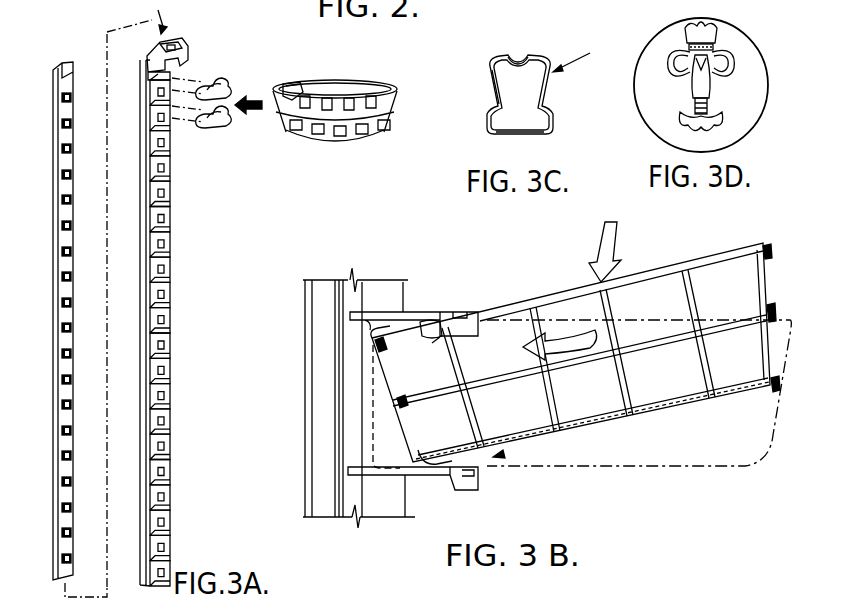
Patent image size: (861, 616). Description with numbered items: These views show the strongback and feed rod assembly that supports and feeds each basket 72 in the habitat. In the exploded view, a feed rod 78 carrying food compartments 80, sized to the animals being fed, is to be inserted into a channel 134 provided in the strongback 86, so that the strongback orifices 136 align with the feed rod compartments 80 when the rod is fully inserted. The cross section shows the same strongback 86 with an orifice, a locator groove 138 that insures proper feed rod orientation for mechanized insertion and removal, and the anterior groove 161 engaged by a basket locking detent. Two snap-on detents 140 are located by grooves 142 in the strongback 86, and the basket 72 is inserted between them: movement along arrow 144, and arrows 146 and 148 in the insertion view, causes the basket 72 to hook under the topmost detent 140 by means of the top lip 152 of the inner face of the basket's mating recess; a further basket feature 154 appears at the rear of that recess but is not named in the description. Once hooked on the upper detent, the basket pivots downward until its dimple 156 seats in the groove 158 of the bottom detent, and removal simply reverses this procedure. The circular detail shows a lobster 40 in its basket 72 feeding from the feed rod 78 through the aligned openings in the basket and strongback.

In FIG. 3D, the lobster emblem 40 is at (708, 97).
In FIG. 3A, the basket 72 is at (385, 88).
In FIG. 3B, the basket 72 is at (797, 213).
In FIG. 3D, the basket 72 is at (722, 28).
In FIG. 3A, the feed rod 78 is at (51, 198).
In FIG. 3A, the compartments 80 is at (62, 120).
In FIG. 3C, the strongback 86 is at (573, 67).
In FIG. 3A, the channel 134 is at (178, 48).
In FIG. 3C, the channel 134 is at (540, 115).
In FIG. 3A, the orifices 136 is at (168, 184).
In FIG. 3C, the orifices 136 is at (525, 134).
In FIG. 3C, the locator groove 138 is at (522, 60).
In FIG. 3A, the snap-on detent 140 is at (229, 72).
In FIG. 3B, the snap-on detent 140 is at (472, 313).
In FIG. 3A, the grooves 142 is at (150, 138).
In FIG. 3A, the arrow 144 is at (252, 99).
In FIG. 3B, the arrow 146 is at (616, 252).
In FIG. 3B, the arrow 148 is at (572, 330).
In FIG. 3A, the top lip 152 is at (300, 85).
In FIG. 3B, the top lip 152 is at (440, 327).
In FIG. 3B, the rear hook 154 is at (437, 326).
In FIG. 3B, the dimple 156 is at (500, 460).
In FIG. 3B, the groove 158 is at (458, 479).
In FIG. 3C, the anterior groove 161 is at (492, 96).